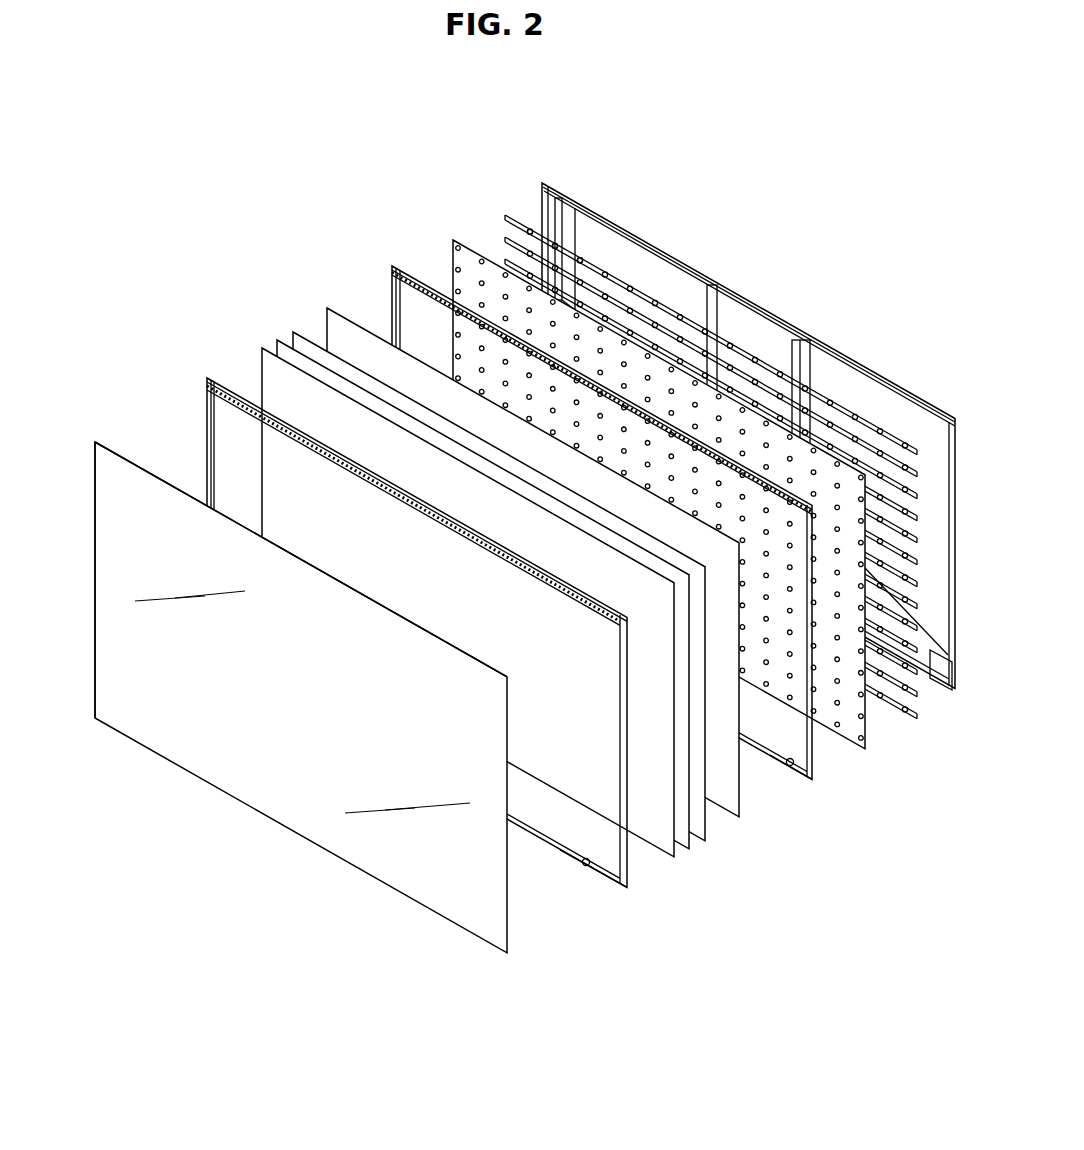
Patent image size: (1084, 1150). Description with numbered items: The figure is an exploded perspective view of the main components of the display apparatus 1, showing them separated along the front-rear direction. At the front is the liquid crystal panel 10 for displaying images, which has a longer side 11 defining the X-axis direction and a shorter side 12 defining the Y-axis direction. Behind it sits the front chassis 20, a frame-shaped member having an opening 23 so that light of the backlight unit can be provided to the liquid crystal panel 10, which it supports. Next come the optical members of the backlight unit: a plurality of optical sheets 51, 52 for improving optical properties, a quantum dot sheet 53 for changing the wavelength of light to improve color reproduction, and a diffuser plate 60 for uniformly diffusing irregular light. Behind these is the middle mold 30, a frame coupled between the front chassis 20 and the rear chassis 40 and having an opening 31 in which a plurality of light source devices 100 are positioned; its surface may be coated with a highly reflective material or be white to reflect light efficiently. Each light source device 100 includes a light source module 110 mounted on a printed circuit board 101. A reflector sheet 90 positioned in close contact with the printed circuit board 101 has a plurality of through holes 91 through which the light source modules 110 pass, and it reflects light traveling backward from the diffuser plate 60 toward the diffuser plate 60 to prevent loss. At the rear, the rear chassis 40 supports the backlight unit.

The display apparatus 1 is at (312, 141).
The liquid crystal panel 10 is at (272, 687).
The longer side 11 is at (158, 478).
The shorter side 12 is at (95, 545).
The front chassis 20 is at (396, 635).
The opening 23 is at (588, 866).
The middle mold 30 is at (594, 511).
The opening 31 is at (790, 768).
The rear chassis 40 is at (640, 236).
The optical sheet 51 is at (262, 360).
The optical sheet 52 is at (277, 352).
The quantum dot sheet 53 is at (293, 334).
The diffuser plate 60 is at (335, 327).
The reflector sheet 90 is at (649, 461).
The through holes 91 is at (500, 298).
The light source device 100 is at (693, 398).
The printed circuit board 101 is at (520, 218).
The light source module 110 is at (513, 213).